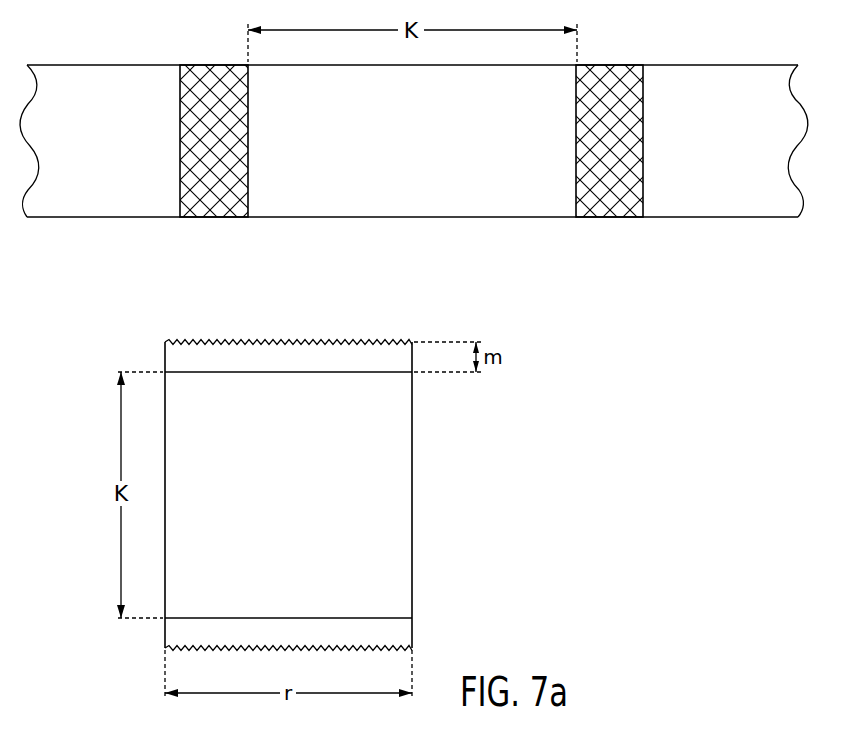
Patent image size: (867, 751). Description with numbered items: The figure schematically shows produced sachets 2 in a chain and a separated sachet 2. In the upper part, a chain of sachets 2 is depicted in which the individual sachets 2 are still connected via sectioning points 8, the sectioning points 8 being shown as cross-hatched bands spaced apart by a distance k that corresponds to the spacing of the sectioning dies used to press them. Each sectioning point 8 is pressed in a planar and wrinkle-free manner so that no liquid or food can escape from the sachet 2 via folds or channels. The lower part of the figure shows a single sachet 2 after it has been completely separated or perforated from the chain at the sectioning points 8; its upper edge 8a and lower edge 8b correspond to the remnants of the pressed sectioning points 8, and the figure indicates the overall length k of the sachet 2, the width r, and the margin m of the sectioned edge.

The sachet 2 is at (360, 207).
The sectioning point 8 is at (215, 213).
The upper edge of strip element 8a is at (242, 346).
The lower edge of strip element 8b is at (400, 632).